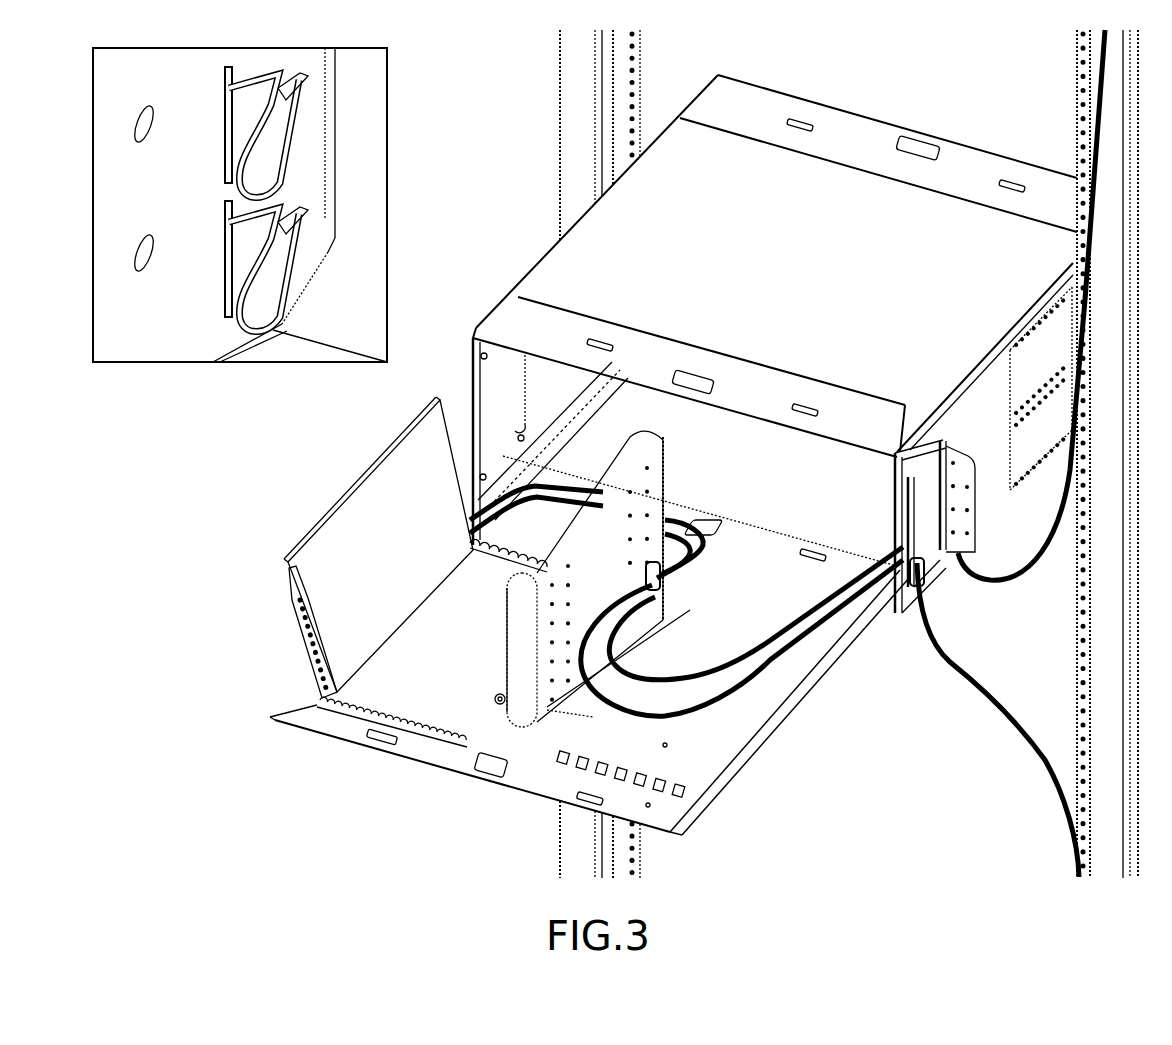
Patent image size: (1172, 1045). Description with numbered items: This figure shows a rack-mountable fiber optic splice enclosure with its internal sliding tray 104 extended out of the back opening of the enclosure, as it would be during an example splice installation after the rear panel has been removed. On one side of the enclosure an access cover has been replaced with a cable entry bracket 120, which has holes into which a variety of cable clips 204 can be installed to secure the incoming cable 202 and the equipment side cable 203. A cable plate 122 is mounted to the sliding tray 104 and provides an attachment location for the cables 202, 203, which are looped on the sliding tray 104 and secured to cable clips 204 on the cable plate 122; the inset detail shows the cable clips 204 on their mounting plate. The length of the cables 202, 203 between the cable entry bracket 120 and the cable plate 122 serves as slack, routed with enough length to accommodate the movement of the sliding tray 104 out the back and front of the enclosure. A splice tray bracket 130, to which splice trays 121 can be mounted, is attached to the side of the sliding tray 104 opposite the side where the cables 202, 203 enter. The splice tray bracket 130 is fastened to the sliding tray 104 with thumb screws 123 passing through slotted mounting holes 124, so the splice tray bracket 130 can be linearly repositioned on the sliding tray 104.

The sliding tray 104 is at (720, 743).
The cable entry bracket 120 is at (960, 467).
The splice trays 121 is at (340, 592).
The cable plate 122 is at (523, 700).
The thumb screws 123 is at (500, 704).
The slotted mounting holes 124 is at (497, 713).
The splice tray bracket 130 is at (413, 690).
The incoming cable 202 is at (1100, 65).
The equipment side cable 203 is at (1034, 745).
The cable clips 204 is at (298, 252).